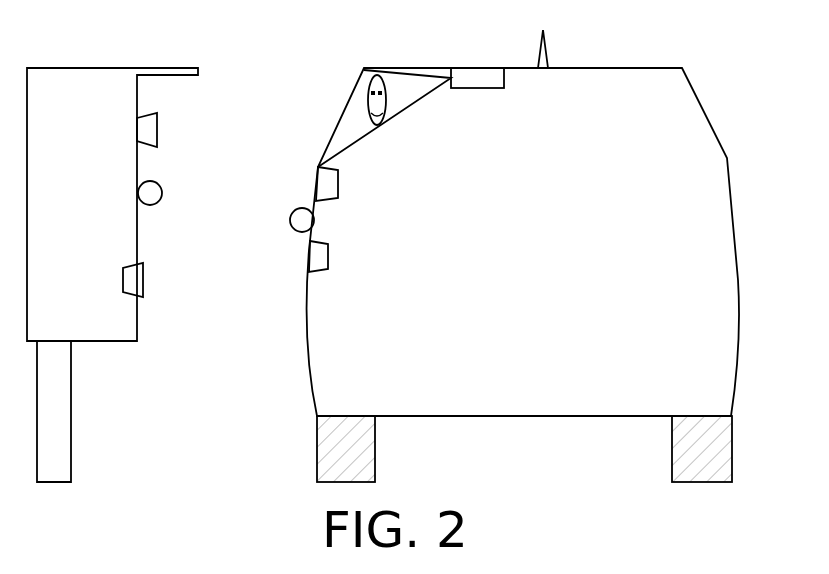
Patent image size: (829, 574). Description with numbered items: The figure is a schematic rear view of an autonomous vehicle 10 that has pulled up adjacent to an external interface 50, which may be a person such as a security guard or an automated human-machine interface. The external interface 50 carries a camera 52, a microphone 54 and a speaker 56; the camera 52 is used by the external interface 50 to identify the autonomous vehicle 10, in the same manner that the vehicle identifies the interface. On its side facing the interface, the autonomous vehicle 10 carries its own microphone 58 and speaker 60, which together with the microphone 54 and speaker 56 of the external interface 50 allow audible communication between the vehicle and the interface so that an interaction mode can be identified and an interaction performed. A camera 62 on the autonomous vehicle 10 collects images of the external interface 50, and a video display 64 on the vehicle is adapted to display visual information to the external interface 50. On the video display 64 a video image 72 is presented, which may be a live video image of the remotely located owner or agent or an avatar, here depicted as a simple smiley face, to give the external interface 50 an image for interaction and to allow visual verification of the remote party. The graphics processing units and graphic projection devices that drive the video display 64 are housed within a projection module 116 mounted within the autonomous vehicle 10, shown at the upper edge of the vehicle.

The autonomous vehicle 10 is at (523, 418).
The external interface 50 is at (97, 222).
The camera 52 is at (148, 129).
The microphone 54 is at (145, 196).
The speaker 56 is at (133, 278).
The microphone 58 is at (305, 218).
The speaker 60 is at (318, 255).
The camera 62 is at (327, 182).
The video display 64 is at (343, 133).
The video image 72 is at (376, 103).
The projection module 116 is at (478, 78).